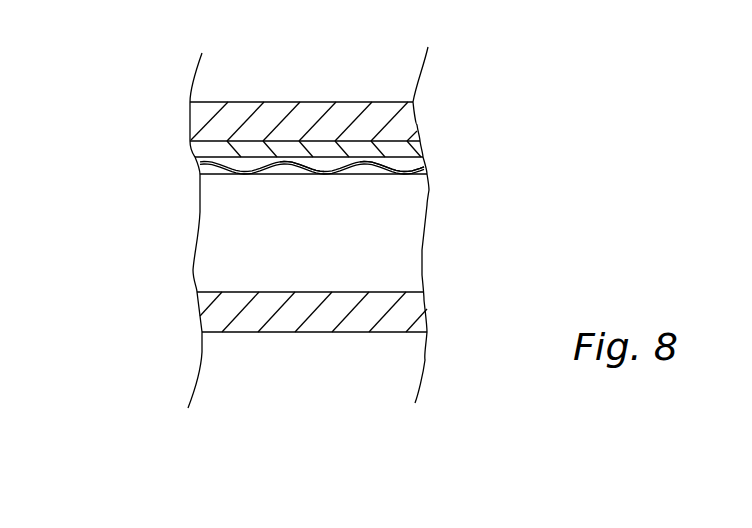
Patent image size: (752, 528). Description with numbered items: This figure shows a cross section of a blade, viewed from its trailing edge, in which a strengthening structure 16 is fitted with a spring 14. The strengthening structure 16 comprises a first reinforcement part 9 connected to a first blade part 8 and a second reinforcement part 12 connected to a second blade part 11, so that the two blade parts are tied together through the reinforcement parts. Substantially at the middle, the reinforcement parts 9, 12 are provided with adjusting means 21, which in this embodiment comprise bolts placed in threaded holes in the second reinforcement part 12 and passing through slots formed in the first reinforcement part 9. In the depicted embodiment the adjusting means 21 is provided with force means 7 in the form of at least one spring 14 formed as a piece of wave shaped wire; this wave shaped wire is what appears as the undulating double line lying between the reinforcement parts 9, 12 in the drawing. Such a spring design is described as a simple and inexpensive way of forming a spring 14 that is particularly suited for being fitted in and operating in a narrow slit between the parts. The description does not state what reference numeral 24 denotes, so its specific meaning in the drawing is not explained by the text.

The force means 7 is at (404, 172).
The first blade part 8 is at (354, 314).
The first reinforcement part 9 is at (398, 257).
The second blade part 11 is at (347, 117).
The second reinforcement part 12 is at (395, 152).
The spring 14 is at (215, 162).
The strengthening structure 16 is at (151, 212).
The adjusting means 21 is at (153, 154).
The corrugation 24 is at (291, 162).